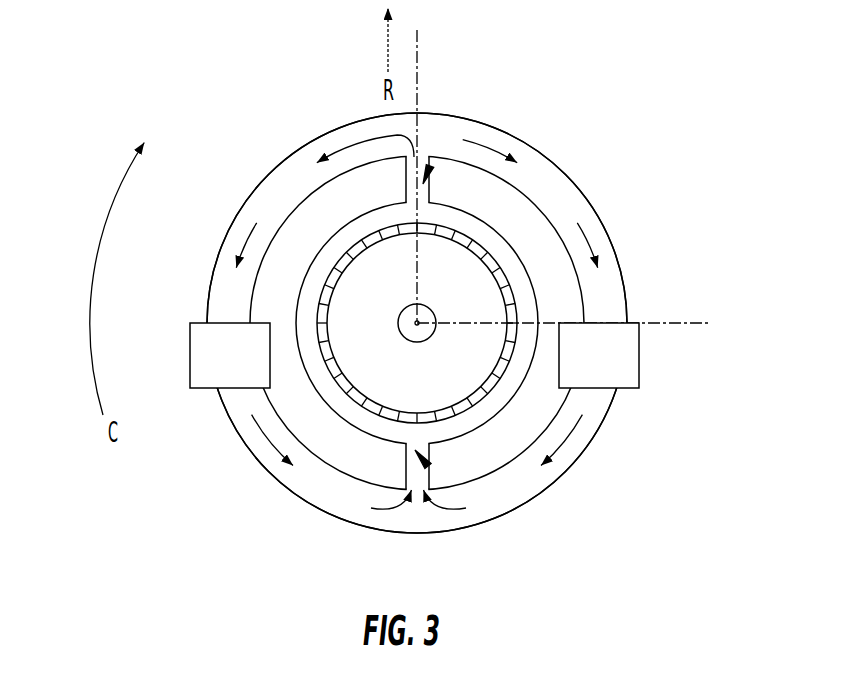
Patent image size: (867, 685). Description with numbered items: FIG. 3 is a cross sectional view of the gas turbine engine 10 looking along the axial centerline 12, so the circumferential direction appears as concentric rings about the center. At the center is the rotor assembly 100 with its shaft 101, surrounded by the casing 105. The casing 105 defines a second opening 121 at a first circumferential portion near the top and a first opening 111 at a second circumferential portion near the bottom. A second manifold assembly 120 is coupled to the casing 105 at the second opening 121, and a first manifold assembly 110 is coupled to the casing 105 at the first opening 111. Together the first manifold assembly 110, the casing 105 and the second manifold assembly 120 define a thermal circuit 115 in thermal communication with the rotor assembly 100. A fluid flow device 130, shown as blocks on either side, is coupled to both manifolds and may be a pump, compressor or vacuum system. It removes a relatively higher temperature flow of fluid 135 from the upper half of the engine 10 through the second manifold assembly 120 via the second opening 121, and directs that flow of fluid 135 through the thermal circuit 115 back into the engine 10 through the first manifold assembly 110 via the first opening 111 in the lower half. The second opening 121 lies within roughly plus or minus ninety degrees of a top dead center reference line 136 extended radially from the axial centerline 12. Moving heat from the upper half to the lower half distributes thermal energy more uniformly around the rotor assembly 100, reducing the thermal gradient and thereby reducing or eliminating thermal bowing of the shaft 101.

The gas turbine engine 10 is at (214, 83).
The axial centerline 12 is at (420, 330).
The rotor assembly 100 is at (457, 267).
The shaft 101 is at (398, 327).
The casing 105 is at (540, 307).
The first manifold assembly 110 is at (372, 532).
The first opening 111 is at (428, 466).
The thermal circuit 115 is at (258, 215).
The second manifold assembly 120 is at (310, 142).
The second opening 121 is at (430, 165).
The fluid flow device 130 is at (188, 348).
The flow of fluid 135 is at (267, 435).
The top dead center reference line 136 is at (418, 63).